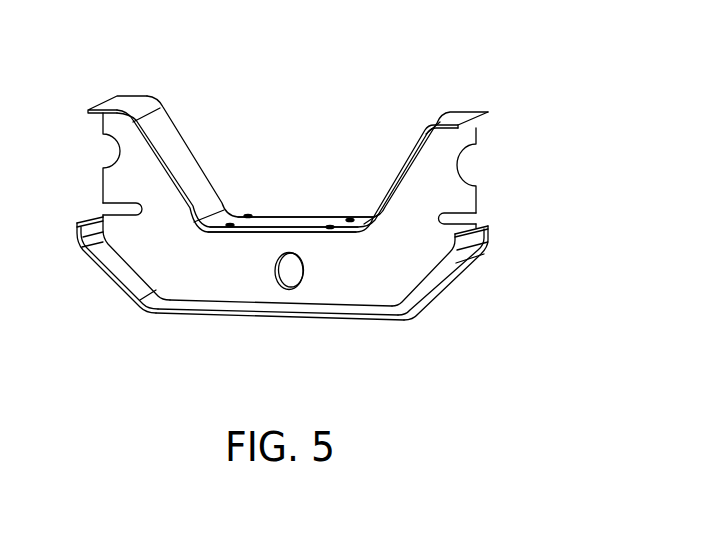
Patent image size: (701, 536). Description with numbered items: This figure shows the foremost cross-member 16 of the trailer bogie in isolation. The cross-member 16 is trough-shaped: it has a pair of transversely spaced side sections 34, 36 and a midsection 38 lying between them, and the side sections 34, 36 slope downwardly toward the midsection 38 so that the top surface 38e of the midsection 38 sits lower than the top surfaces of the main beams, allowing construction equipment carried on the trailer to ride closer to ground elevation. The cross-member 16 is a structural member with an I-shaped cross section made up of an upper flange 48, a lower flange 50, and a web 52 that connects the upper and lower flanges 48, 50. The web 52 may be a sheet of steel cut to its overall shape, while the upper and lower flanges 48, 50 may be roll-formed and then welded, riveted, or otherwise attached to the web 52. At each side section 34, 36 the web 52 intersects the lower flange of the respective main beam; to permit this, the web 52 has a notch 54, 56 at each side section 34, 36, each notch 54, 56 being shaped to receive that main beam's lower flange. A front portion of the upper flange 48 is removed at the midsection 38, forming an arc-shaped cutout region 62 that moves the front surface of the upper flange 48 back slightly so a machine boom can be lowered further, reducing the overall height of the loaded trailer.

The foremost cross-member 16 is at (354, 86).
The side section 34 is at (132, 256).
The side section 36 is at (463, 189).
The midsection 38 is at (320, 290).
The top surface of the midsection 38e is at (273, 212).
The upper flange 48 is at (168, 150).
The lower flange 50 is at (170, 314).
The web 52 is at (246, 293).
The notch 54 is at (120, 210).
The notch 56 is at (464, 224).
The arc-shaped cutout region 62 is at (335, 241).